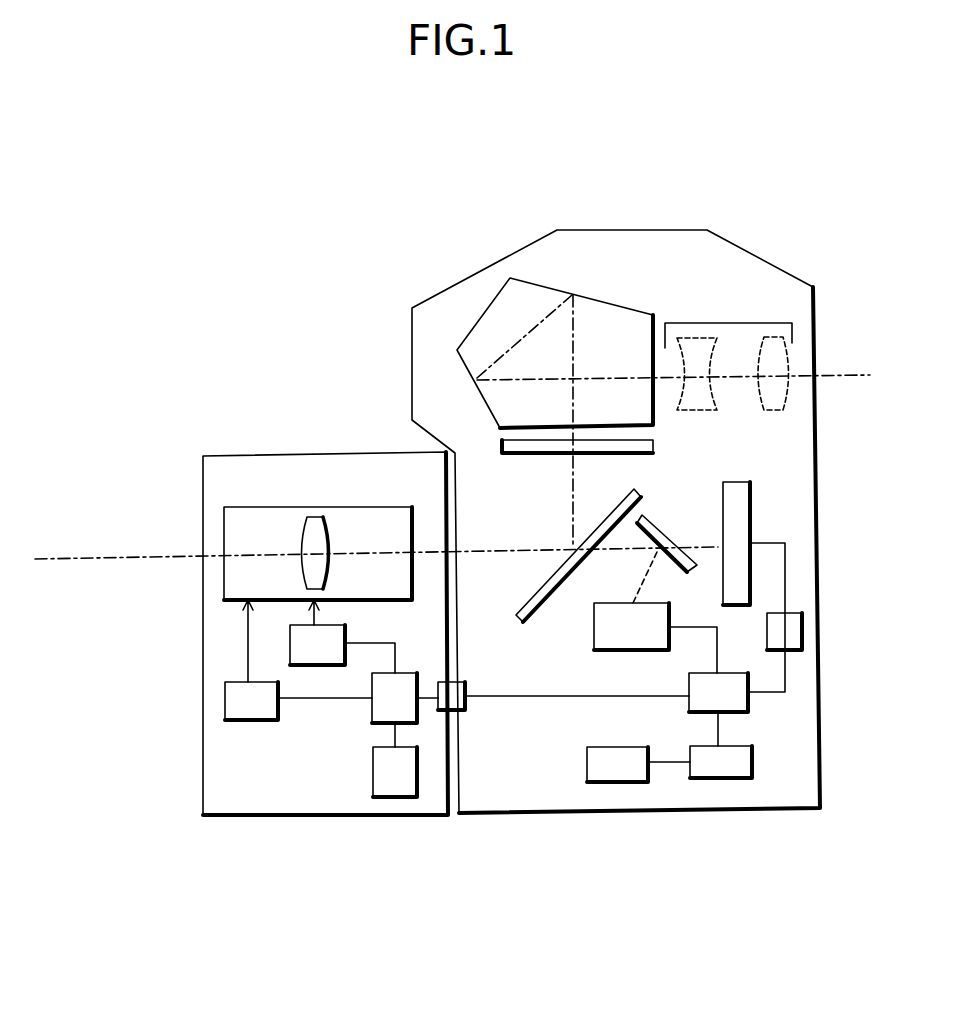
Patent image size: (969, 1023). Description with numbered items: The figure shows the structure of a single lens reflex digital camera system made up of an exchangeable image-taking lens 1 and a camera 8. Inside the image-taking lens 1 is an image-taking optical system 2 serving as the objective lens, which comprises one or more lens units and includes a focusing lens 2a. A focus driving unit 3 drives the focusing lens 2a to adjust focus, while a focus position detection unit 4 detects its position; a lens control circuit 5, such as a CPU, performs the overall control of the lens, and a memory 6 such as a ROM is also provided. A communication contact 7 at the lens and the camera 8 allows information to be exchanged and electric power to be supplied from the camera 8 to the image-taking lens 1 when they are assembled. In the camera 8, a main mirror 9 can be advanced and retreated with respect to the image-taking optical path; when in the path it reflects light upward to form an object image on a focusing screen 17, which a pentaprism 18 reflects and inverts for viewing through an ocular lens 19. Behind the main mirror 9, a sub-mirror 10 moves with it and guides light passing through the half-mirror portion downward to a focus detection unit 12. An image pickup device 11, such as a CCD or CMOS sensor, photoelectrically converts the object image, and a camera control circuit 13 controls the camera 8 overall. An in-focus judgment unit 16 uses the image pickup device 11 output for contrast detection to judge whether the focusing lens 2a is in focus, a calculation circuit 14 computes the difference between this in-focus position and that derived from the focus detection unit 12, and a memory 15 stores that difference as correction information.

The image-taking lens 1 is at (218, 457).
The image-taking optical system 2 is at (298, 508).
The focusing lens 2a is at (327, 523).
The focus driving unit 3 is at (295, 643).
The focus position detection unit 4 is at (228, 702).
The lens control circuit 5 is at (375, 713).
The memory 6 is at (393, 787).
The communication contact 7 is at (445, 708).
The single lens reflex digital camera 8 is at (645, 230).
The main mirror 9 is at (541, 587).
The sub-mirror 10 is at (653, 515).
The image pickup device 11 is at (743, 517).
The focus detection unit 12 is at (600, 642).
The camera control circuit 13 is at (740, 702).
The calculation circuit 14 is at (722, 768).
The memory 15 is at (620, 772).
The in-focus judgment unit 16 is at (790, 630).
The focusing screen 17 is at (653, 438).
The pentaprism 18 is at (583, 295).
The ocular lens 19 is at (730, 323).